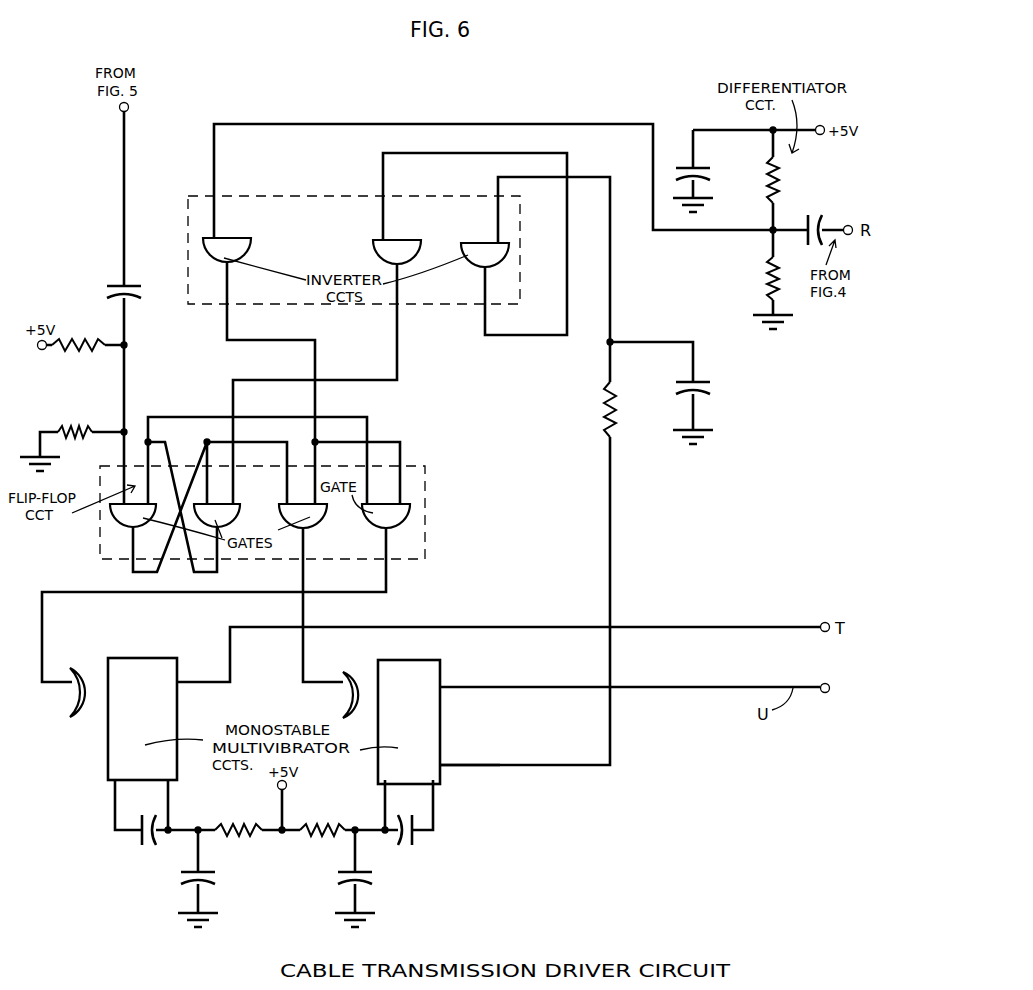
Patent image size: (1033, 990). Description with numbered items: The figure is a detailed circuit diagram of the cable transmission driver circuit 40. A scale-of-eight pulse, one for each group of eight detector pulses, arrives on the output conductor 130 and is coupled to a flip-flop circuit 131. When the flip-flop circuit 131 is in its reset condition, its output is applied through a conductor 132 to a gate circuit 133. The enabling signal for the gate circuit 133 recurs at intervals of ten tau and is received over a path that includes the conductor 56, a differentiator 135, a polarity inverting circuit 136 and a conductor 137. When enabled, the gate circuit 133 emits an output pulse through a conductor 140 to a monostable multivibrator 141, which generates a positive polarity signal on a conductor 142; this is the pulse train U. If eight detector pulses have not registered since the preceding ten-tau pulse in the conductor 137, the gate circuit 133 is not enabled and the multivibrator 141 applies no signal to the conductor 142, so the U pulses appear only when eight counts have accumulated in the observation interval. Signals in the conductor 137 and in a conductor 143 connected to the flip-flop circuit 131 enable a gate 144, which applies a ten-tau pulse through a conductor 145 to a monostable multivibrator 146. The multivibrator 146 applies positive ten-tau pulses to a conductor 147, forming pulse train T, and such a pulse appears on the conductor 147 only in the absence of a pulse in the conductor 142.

The output conductor 130 is at (122, 212).
The polarity inverting circuit 136 is at (207, 248).
The conductor 137 is at (282, 340).
The conductor 143 is at (352, 419).
The flip-flop circuit 131 is at (108, 513).
The conductor 132 is at (263, 440).
The gate circuit 133 is at (312, 518).
The gate 144 is at (398, 521).
The conductor 145 is at (167, 593).
The conductor 140 is at (305, 617).
The monostable multivibrator 146 is at (161, 751).
The monostable multivibrator 141 is at (392, 752).
The conductor 147 is at (710, 627).
The conductor 142 is at (715, 688).
The differentiator 135 is at (792, 190).
The conductor 56 is at (840, 228).
The cable transmission driver circuit 40 is at (530, 791).